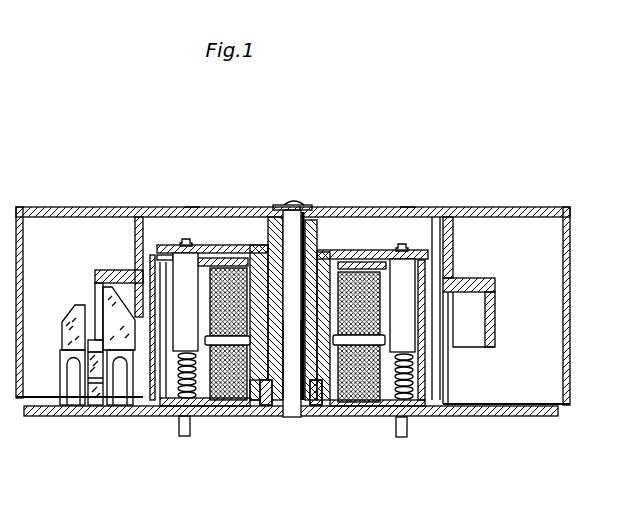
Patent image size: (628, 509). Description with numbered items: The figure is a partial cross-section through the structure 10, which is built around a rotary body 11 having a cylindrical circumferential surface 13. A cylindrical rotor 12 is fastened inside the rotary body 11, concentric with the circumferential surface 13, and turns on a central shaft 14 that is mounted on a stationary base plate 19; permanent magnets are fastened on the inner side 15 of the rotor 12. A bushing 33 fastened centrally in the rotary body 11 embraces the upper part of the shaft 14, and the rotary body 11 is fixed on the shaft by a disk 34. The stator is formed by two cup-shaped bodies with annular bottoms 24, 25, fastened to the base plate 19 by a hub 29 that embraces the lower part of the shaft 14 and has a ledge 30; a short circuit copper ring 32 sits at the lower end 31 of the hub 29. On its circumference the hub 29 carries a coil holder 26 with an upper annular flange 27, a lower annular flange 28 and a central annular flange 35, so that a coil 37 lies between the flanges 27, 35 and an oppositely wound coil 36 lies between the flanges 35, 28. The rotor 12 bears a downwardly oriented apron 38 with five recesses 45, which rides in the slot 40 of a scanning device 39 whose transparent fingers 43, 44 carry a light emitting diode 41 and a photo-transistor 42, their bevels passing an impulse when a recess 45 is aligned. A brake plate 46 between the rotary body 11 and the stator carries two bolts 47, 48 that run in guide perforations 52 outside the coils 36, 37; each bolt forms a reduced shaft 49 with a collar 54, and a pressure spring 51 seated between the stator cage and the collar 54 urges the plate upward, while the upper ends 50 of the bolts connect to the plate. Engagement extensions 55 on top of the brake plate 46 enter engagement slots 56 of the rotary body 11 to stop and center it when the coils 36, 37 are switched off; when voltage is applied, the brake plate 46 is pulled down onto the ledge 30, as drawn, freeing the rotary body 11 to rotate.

The structure 10 is at (508, 87).
The rotary body 11 is at (33, 207).
The cylindrical rotor 12 is at (456, 250).
The cylindrical circumferential surface 13 is at (571, 318).
The central shaft 14 is at (287, 222).
The inner side of the rotor 15 is at (449, 365).
The base plate 19 is at (542, 423).
The annular bottom 24 is at (157, 260).
The annular bottom 25 is at (253, 418).
The coil holder 26 is at (240, 415).
The upper annular flange 27 is at (353, 270).
The lower annular flange 28 is at (347, 403).
The hub 29 is at (305, 417).
The ledge 30 is at (323, 262).
The lower end of the hub 31 is at (275, 405).
The short circuit copper ring 32 is at (313, 418).
The bushing 33 is at (273, 240).
The disk 34 is at (299, 203).
The central annular flange 35 is at (290, 360).
The coil 36 is at (363, 403).
The coil 37 is at (375, 268).
The apron 38 is at (495, 307).
The scanning device 39 is at (93, 400).
The slot 40 is at (98, 372).
The light emitting diode 41 is at (72, 398).
The photo-transistor 42 is at (122, 396).
The finger 43 is at (73, 318).
The finger 44 is at (108, 305).
The recess 45 is at (93, 336).
The brake plate 46 is at (163, 245).
The bolt 47 is at (195, 309).
The bolt 48 is at (411, 310).
The shaft 49 is at (403, 438).
The upper end of the bolt 50 is at (430, 262).
The pressure spring 51 is at (408, 388).
The guide perforation 52 is at (198, 253).
The collar 54 is at (426, 380).
The engagement extension 55 is at (185, 238).
The engagement slot 56 is at (193, 213).